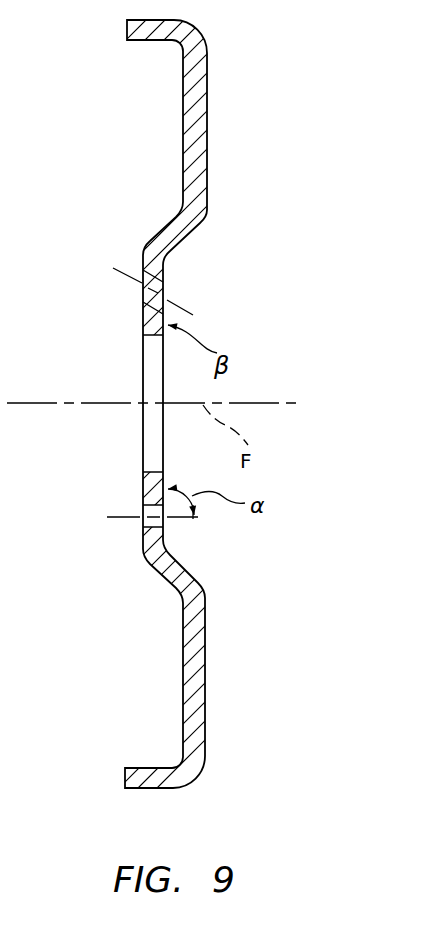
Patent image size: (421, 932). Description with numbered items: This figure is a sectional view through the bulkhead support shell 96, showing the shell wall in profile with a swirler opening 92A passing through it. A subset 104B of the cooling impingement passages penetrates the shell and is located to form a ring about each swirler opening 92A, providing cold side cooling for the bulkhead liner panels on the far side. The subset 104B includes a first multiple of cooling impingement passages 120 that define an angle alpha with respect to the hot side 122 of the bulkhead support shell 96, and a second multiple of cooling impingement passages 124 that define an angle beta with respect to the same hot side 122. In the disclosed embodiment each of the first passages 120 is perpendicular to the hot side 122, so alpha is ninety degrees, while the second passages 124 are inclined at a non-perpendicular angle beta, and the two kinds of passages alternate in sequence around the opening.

The bulkhead support shell 96 is at (232, 157).
The subset of cooling impingement passages 104B is at (215, 300).
The second multiple of cooling impingement passages 124 is at (133, 302).
The swirler opening 92A is at (147, 475).
The first multiple of cooling impingement passages 120 is at (132, 530).
The hot side 122 is at (205, 652).